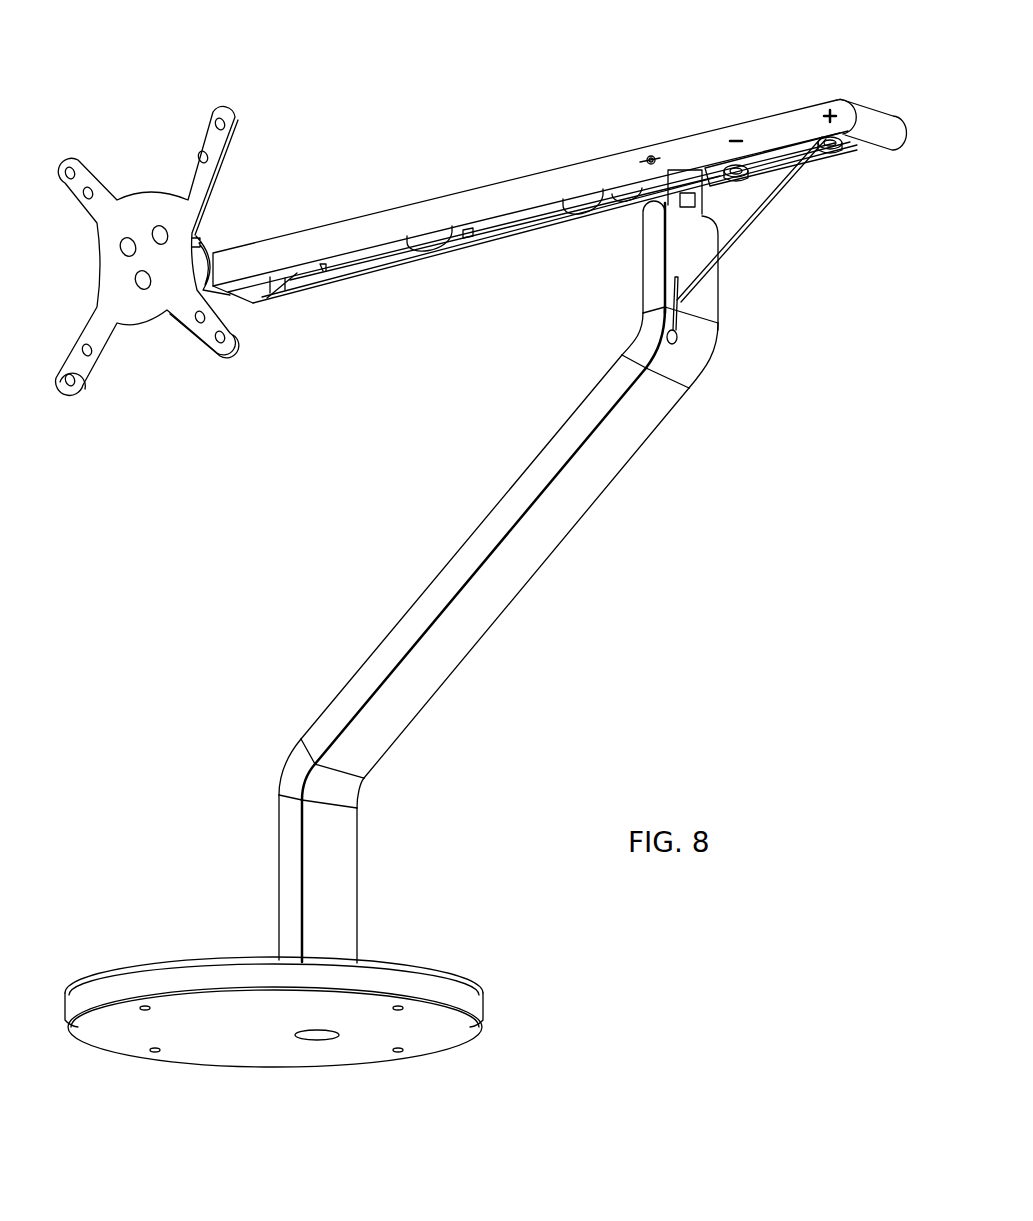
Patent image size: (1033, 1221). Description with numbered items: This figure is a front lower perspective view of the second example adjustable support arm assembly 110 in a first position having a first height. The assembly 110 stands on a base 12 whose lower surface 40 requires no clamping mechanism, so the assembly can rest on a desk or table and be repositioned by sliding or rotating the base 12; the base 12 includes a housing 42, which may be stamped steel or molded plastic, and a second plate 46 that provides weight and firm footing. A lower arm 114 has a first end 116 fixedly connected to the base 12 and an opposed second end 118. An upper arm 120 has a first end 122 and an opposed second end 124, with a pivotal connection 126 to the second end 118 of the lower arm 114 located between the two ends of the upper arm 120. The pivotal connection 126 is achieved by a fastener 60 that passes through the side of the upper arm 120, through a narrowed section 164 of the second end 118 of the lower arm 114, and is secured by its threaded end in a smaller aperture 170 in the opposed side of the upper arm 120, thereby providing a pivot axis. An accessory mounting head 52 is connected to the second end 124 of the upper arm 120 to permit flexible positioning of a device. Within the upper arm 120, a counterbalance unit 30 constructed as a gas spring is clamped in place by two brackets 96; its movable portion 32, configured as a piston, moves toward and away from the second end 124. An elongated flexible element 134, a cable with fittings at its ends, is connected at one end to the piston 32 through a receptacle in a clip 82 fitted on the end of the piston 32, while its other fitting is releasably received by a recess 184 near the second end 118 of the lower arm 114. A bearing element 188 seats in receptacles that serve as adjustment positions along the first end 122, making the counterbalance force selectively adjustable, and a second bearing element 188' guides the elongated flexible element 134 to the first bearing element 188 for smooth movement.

The adjustable support arm assembly 110 is at (742, 54).
The base 12 is at (304, 995).
The lower surface 40 is at (230, 1032).
The housing 42 is at (465, 1000).
The second plate 46 is at (443, 1036).
The accessory mounting head 52 is at (220, 237).
The lower arm 114 is at (538, 582).
The first end 116 is at (345, 947).
The second end 118 is at (652, 266).
The upper arm 120 is at (560, 193).
The first end 122 is at (813, 105).
The second end 124 is at (232, 257).
The pivotal connection 126 is at (663, 151).
The smaller aperture 170 is at (645, 160).
The fastener 60 is at (647, 157).
The counterbalance unit 30 is at (512, 225).
The movable portion 32 is at (353, 284).
The clip 82 is at (300, 272).
The brackets 96 is at (428, 244).
The elongated flexible element 134 is at (778, 184).
The narrowed section 164 is at (678, 194).
The recess 184 is at (678, 340).
The bearing element 188 is at (853, 176).
The second bearing element 188' is at (785, 218).